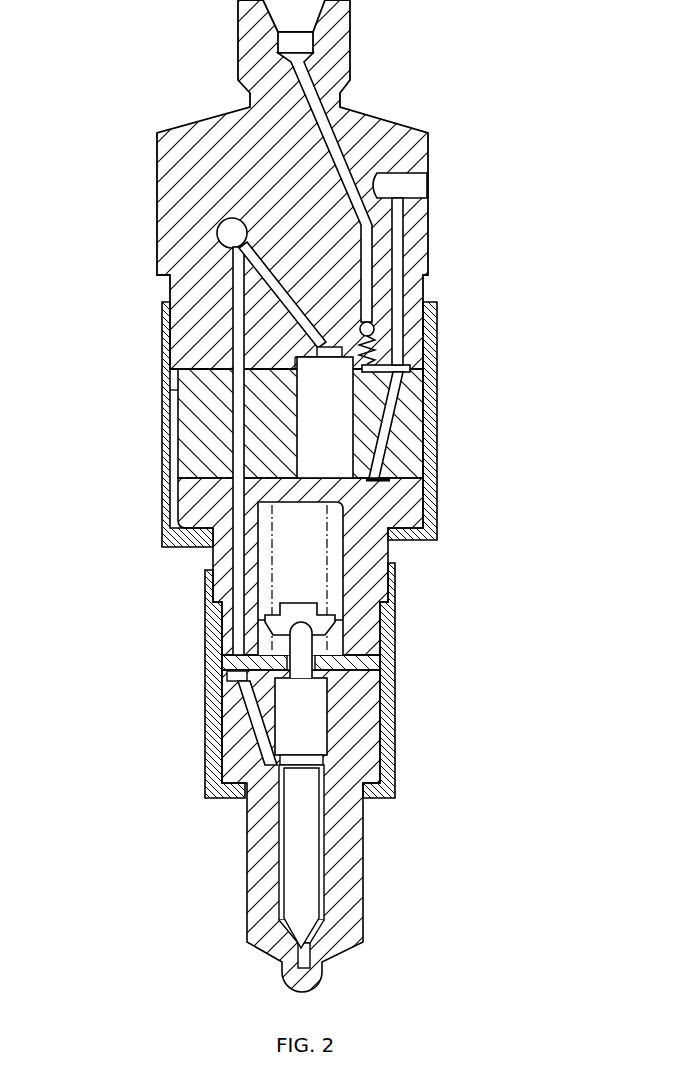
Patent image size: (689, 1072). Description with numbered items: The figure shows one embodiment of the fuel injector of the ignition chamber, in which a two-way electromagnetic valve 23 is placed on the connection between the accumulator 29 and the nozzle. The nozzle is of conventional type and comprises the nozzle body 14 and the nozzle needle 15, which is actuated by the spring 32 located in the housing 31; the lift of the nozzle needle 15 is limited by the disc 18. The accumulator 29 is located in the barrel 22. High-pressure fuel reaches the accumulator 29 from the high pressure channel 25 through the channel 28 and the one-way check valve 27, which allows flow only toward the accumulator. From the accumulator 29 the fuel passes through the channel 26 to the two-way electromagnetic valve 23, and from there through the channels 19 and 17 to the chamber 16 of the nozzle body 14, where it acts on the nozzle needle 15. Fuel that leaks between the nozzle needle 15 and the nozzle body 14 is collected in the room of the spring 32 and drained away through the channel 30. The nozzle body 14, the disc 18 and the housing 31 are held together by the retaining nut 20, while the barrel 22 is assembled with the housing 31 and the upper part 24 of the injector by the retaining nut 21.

The nozzle body 14 is at (262, 905).
The nozzle needle 15 is at (297, 847).
The chamber of the nozzle 16 is at (262, 762).
The channel 17 is at (250, 718).
The disc 18 is at (223, 665).
The channel 19 is at (238, 623).
The retaining nut 20 is at (210, 585).
The retaining nut 21 is at (170, 490).
The barrel 22 is at (207, 437).
The two-way electromagnetic valve 23 is at (218, 237).
The upper part 24 is at (202, 173).
The high pressure channel 25 is at (325, 119).
The channel 26 is at (273, 283).
The one-way check valve 27 is at (360, 332).
The channel 28 is at (313, 363).
The accumulator 29 is at (330, 430).
The channel 30 is at (360, 497).
The housing 31 is at (367, 555).
The spring 32 is at (328, 572).